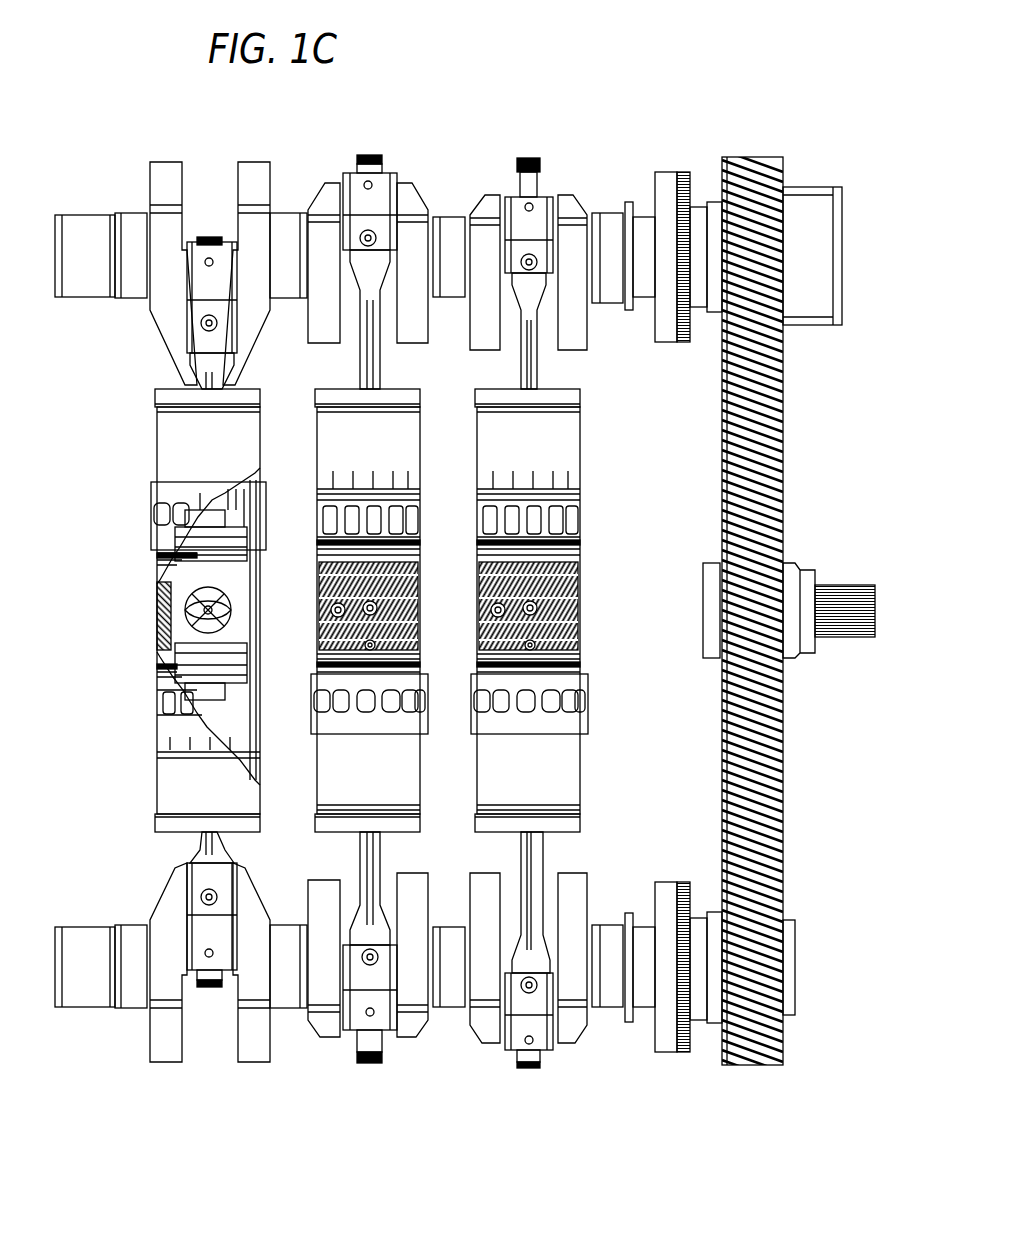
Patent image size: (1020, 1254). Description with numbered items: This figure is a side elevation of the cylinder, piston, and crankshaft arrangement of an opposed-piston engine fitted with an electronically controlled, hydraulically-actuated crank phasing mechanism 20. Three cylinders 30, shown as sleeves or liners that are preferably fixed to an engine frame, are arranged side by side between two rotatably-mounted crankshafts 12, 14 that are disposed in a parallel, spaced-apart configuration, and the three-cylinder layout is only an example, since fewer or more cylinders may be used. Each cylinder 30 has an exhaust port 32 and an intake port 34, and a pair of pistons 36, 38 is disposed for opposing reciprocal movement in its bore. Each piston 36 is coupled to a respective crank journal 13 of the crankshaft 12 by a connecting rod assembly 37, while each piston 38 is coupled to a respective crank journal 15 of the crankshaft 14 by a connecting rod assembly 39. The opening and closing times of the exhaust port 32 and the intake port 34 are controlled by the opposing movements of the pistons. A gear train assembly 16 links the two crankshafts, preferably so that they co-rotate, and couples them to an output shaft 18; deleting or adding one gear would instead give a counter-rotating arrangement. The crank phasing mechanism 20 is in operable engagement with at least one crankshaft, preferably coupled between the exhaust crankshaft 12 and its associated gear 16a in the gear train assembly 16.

The crankshaft 12 is at (607, 235).
The crank journal 13 is at (163, 317).
The crankshaft 14 is at (607, 990).
The crank journal 15 is at (170, 893).
The gear train assembly 16 is at (777, 332).
The gear 16a is at (752, 157).
The output shaft 18 is at (842, 595).
The crank phasing mechanism 20 is at (815, 210).
The cylinder 30 is at (400, 450).
The exhaust port 32 is at (157, 498).
The intake port 34 is at (157, 700).
The piston 36 is at (158, 578).
The connecting rod assembly 37 is at (190, 372).
The piston 38 is at (165, 630).
The connecting rod assembly 39 is at (190, 850).